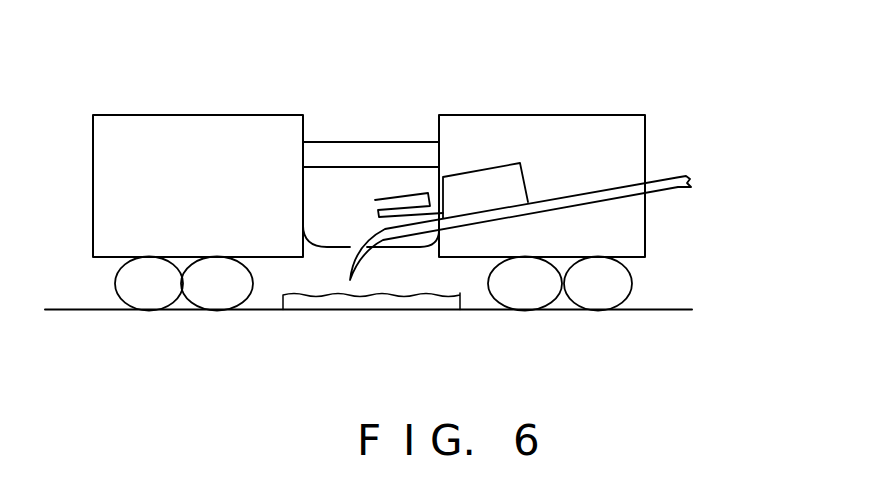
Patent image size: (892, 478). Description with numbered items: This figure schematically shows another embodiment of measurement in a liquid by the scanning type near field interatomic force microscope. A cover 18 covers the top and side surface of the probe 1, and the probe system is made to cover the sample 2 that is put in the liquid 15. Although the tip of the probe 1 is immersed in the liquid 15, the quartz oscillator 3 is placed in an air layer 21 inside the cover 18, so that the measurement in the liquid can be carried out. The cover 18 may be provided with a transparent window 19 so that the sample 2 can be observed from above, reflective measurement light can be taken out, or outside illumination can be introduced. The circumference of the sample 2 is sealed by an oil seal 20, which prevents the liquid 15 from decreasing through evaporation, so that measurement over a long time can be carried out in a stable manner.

The probe 1 is at (655, 187).
The sample 2 is at (388, 300).
The quartz oscillator 3 is at (412, 198).
The liquid 15 is at (262, 307).
The cover 18 is at (590, 138).
The transparent window 19 is at (365, 152).
The oil seal 20 is at (150, 300).
The air layer 21 is at (357, 182).